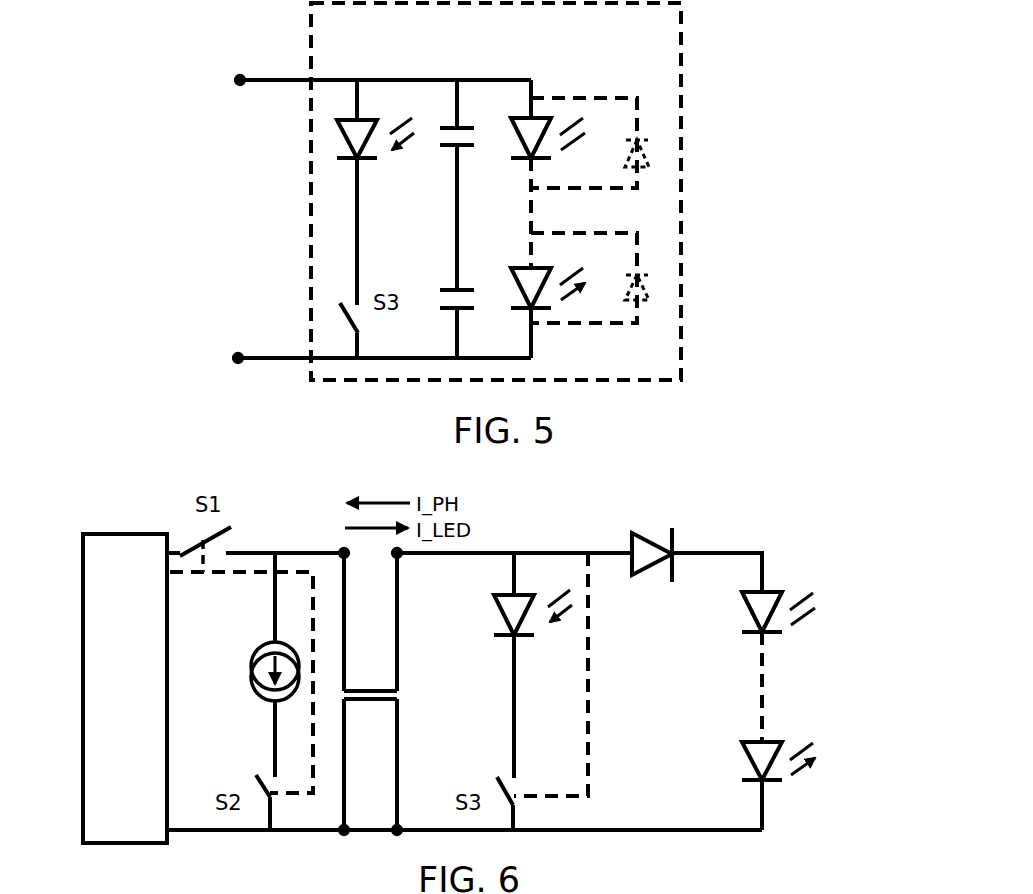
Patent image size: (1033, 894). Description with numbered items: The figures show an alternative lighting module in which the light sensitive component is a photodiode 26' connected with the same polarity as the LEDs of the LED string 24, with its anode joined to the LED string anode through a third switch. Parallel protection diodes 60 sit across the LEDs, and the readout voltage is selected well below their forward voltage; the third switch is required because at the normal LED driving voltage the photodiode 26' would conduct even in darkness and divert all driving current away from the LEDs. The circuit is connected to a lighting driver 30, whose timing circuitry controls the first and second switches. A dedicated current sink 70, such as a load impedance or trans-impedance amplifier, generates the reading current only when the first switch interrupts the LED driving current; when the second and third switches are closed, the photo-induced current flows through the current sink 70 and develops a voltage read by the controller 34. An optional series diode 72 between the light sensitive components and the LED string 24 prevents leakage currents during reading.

In FIG. 5, the LED string 24 is at (558, 72).
In FIG. 6, the LED string 24 is at (780, 543).
In FIG. 5, the photodiode 26' is at (320, 192).
In FIG. 6, the photodiode 26' is at (488, 665).
In FIG. 5, the parallel protection diodes 60 is at (650, 156).
In FIG. 6, the lighting driver 30 is at (190, 470).
In FIG. 6, the controller 34 is at (82, 602).
In FIG. 6, the current sink 70 is at (250, 673).
In FIG. 6, the series diode 72 is at (650, 535).